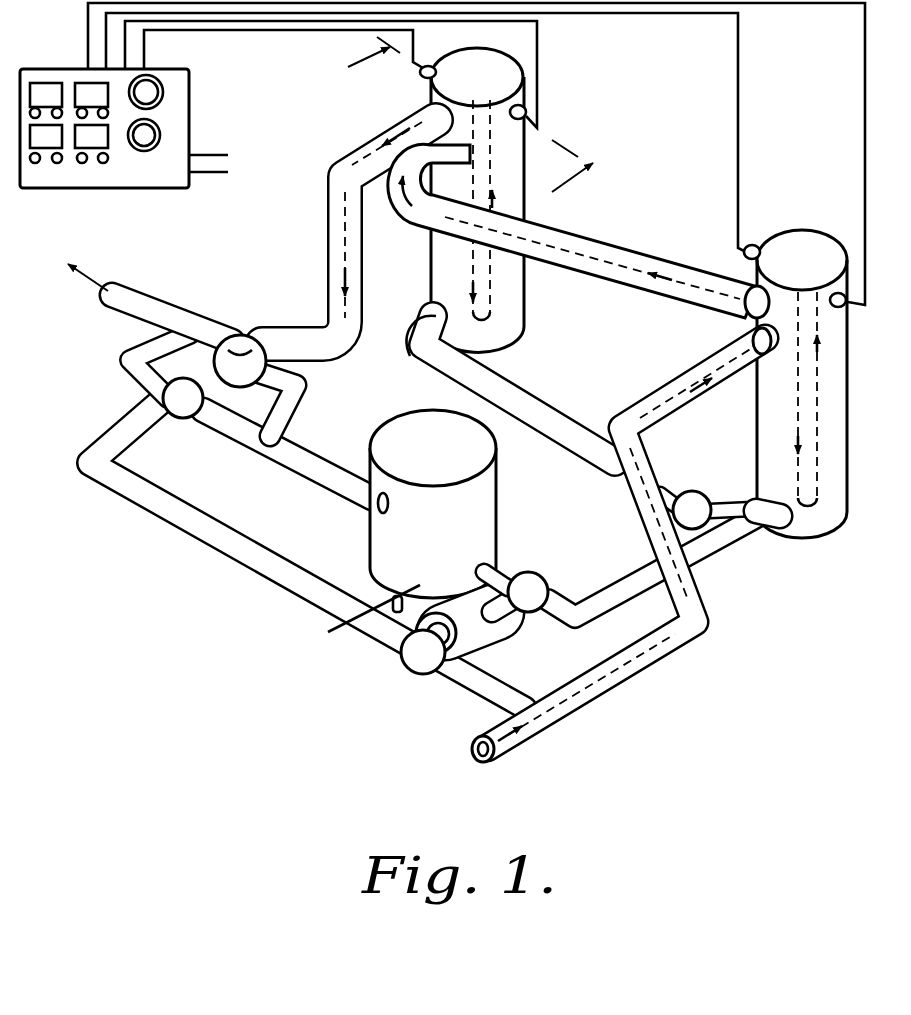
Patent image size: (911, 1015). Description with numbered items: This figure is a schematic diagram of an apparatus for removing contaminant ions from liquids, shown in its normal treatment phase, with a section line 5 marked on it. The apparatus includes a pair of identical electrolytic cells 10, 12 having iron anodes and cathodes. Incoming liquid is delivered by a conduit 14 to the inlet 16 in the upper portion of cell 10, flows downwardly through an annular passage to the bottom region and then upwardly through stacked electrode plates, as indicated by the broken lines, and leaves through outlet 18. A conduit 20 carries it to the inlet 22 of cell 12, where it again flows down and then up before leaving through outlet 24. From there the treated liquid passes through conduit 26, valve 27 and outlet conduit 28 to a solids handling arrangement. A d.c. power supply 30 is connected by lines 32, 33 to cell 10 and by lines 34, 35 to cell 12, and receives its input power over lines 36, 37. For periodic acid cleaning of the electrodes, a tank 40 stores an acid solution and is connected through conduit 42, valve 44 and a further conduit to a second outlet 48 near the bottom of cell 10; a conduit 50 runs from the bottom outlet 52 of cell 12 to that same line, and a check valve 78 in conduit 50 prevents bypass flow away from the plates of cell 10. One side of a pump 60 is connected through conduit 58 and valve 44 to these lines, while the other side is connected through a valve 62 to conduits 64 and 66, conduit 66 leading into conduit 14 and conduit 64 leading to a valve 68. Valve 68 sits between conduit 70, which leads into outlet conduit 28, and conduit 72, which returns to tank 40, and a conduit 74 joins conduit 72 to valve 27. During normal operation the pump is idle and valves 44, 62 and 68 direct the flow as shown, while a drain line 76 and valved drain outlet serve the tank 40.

The section line 5- 5 is at (470, 116).
The electrolytic cell 10 is at (848, 545).
The electrolytic cell 12 is at (530, 296).
The conduit 14 is at (665, 380).
The inlet 16 is at (765, 360).
The outlet 18 is at (740, 305).
The conduit 20 is at (662, 258).
The inlet 22 is at (436, 191).
The outlet 24 is at (415, 143).
The conduit 26 is at (326, 253).
The valve 27 is at (241, 334).
The conduit 28 is at (162, 296).
The d.c. power supply 30 is at (180, 83).
The line 32 is at (736, 77).
The line 33 is at (863, 115).
The line 34 is at (418, 42).
The line 35 is at (541, 31).
The line 36 is at (228, 174).
The line 37 is at (228, 152).
The tank 40 is at (499, 465).
The conduit 42 is at (510, 568).
The valve 44 is at (545, 574).
The second outlet 48 is at (782, 538).
The conduit 50 is at (548, 418).
The bottom outlet 52 is at (441, 316).
The conduit 58 is at (522, 614).
The conduit 60 is at (492, 652).
The valve 62 is at (400, 658).
The conduit 64 is at (190, 535).
The conduit 66 is at (462, 688).
The valve 68 is at (183, 419).
The conduit 70 is at (118, 352).
The conduit 72 is at (296, 470).
The conduit 74 is at (302, 397).
The conduit 76 is at (636, 574).
The check valve 78 is at (708, 494).